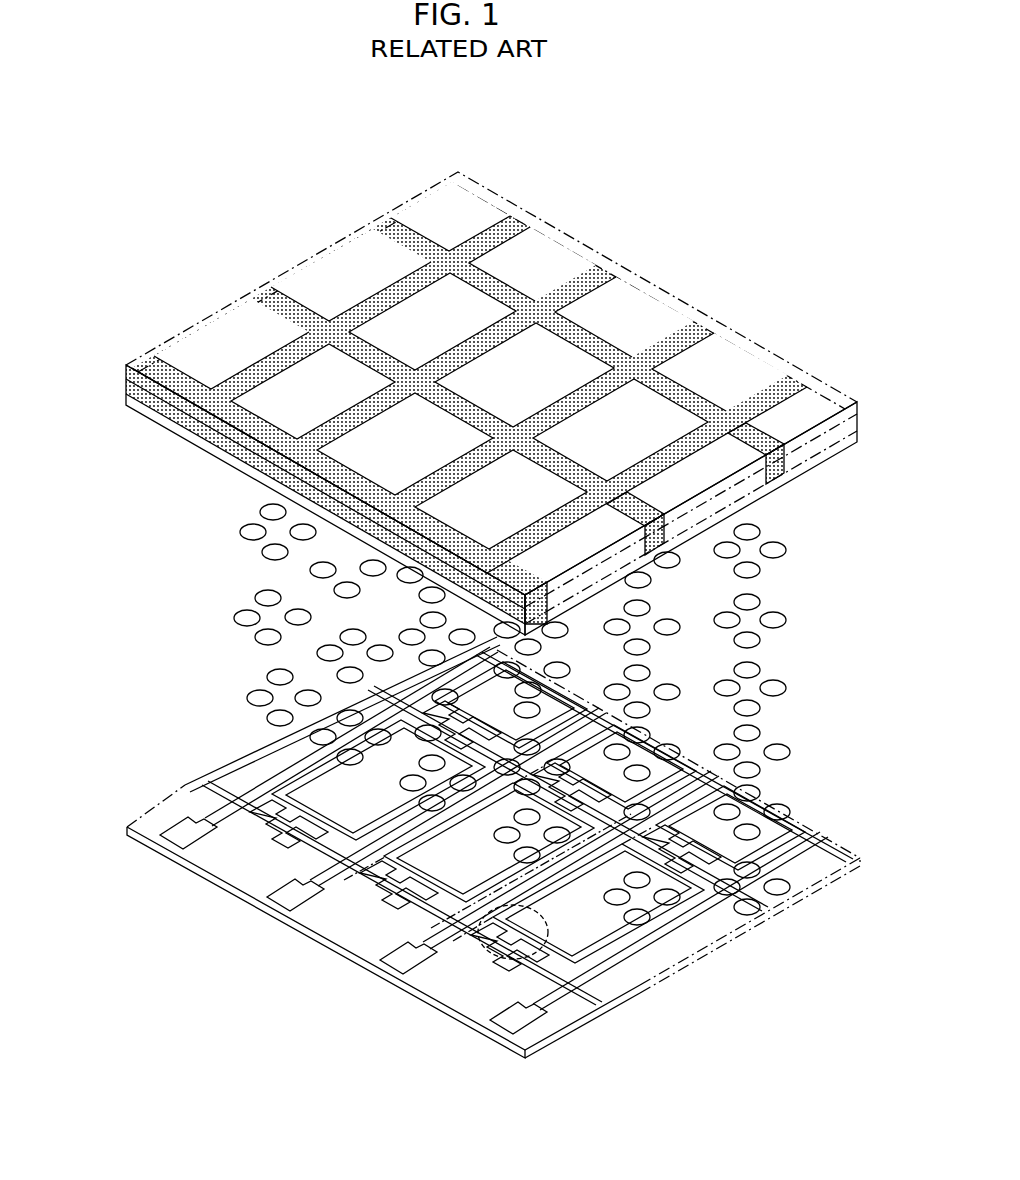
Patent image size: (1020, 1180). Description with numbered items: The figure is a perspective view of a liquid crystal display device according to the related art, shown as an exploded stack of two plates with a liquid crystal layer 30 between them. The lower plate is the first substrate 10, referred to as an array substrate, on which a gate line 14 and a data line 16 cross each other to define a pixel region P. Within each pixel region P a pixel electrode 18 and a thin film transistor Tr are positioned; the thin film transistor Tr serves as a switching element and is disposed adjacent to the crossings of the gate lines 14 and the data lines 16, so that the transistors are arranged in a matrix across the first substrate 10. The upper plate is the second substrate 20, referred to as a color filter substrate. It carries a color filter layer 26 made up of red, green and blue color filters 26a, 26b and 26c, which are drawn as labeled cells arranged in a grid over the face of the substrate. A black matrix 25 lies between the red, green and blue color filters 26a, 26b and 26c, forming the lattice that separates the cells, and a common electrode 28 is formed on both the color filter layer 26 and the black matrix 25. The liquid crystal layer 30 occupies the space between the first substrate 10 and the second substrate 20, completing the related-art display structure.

The first substrate 10 is at (512, 1050).
The gate line 14 is at (590, 1005).
The data line 16 is at (612, 963).
The pixel electrode 18 is at (657, 927).
The pixel region P is at (390, 893).
The thin film transistor Tr is at (490, 952).
The second substrate 20 is at (126, 372).
The black matrix 25 is at (700, 334).
The color filter layer 26 is at (471, 310).
The red color filter 26a is at (475, 190).
The green color filter 26b is at (557, 238).
The blue color filter 26c is at (466, 108).
The common electrode 28 is at (126, 400).
The liquid crystal layer 30 is at (850, 512).